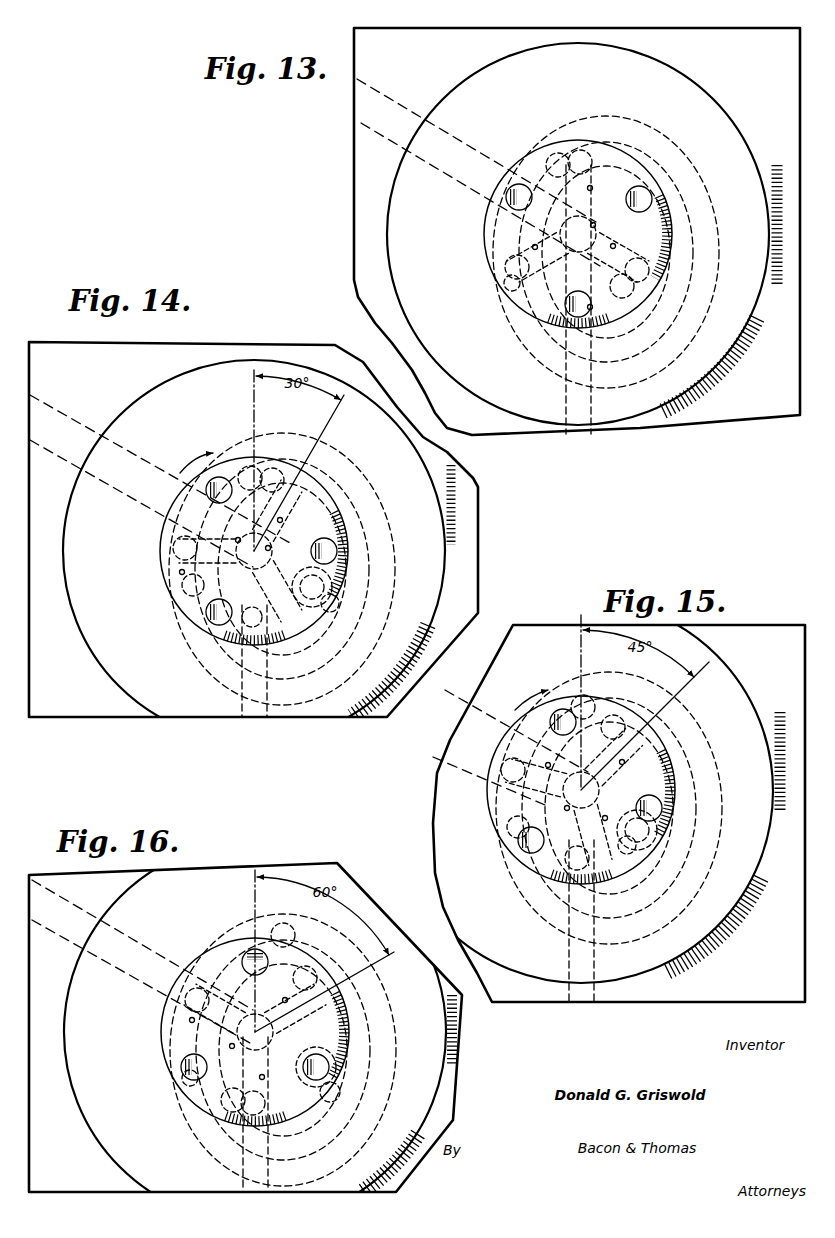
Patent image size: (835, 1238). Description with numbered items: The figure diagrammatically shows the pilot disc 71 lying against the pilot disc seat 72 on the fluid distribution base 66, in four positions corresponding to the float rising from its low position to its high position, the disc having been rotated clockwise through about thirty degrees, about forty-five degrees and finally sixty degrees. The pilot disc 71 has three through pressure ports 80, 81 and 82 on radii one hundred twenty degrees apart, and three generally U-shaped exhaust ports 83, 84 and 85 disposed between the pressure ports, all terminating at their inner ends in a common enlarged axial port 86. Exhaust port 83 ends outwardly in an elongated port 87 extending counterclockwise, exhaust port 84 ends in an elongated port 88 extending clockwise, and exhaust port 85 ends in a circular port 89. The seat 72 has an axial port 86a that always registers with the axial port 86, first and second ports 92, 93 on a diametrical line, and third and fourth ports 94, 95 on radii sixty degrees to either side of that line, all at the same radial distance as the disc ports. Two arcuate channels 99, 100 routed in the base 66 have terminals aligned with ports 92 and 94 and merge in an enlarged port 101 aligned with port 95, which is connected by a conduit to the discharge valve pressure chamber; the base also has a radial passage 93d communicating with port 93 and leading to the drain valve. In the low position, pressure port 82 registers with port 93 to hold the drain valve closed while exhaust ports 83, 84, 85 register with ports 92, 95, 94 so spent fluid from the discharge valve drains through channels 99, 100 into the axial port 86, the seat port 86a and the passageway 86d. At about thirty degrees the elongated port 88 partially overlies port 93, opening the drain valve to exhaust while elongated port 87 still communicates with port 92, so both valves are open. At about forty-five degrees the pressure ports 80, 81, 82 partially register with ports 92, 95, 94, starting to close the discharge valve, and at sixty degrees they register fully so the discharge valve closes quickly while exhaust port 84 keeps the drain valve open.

In FIG. 13, the fluid distribution base 66 is at (352, 161).
In FIG. 14, the fluid distribution base 66 is at (481, 540).
In FIG. 15, the fluid distribution base 66 is at (787, 624).
In FIG. 16, the fluid distribution base 66 is at (465, 1027).
In FIG. 13, the pilot disc 71 is at (545, 143).
In FIG. 14, the pilot disc 71 is at (340, 507).
In FIG. 15, the pilot disc 71 is at (489, 829).
In FIG. 16, the pilot disc 71 is at (160, 1047).
In FIG. 13, the pilot disc seat 72 is at (739, 126).
In FIG. 14, the pilot disc seat 72 is at (99, 669).
In FIG. 15, the pilot disc seat 72 is at (740, 895).
In FIG. 16, the pilot disc seat 72 is at (106, 1154).
In FIG. 13, the pressure port 80 is at (512, 198).
In FIG. 14, the pressure port 80 is at (206, 490).
In FIG. 15, the pressure port 80 is at (563, 709).
In FIG. 16, the pressure port 80 is at (247, 955).
In FIG. 13, the pressure port 81 is at (643, 198).
In FIG. 14, the pressure port 81 is at (335, 554).
In FIG. 15, the pressure port 81 is at (663, 808).
In FIG. 16, the pressure port 81 is at (330, 1068).
In FIG. 13, the pressure port 82 is at (565, 304).
In FIG. 14, the pressure port 82 is at (206, 616).
In FIG. 15, the pressure port 82 is at (520, 846).
In FIG. 16, the pressure port 82 is at (185, 1075).
In FIG. 13, the exhaust port 83 is at (593, 188).
In FIG. 14, the exhaust port 83 is at (283, 521).
In FIG. 15, the exhaust port 83 is at (624, 764).
In FIG. 16, the exhaust port 83 is at (285, 997).
In FIG. 13, the exhaust port 84 is at (616, 246).
In FIG. 14, the exhaust port 84 is at (271, 549).
In FIG. 15, the exhaust port 84 is at (607, 816).
In FIG. 16, the exhaust port 84 is at (265, 1077).
In FIG. 13, the exhaust port 85 is at (532, 247).
In FIG. 14, the exhaust port 85 is at (179, 572).
In FIG. 15, the exhaust port 85 is at (545, 764).
In FIG. 16, the exhaust port 85 is at (189, 1020).
In FIG. 13, the axial port 86 is at (578, 256).
In FIG. 14, the axial port 86 is at (252, 530).
In FIG. 15, the axial port 86 is at (588, 770).
In FIG. 16, the axial port 86 is at (292, 1040).
In FIG. 13, the axial port of seat 86a is at (595, 223).
In FIG. 14, the axial port of seat 86a is at (235, 539).
In FIG. 15, the axial port of seat 86a is at (564, 809).
In FIG. 16, the axial port of seat 86a is at (229, 1046).
In FIG. 13, the passageway 86d is at (405, 108).
In FIG. 14, the passageway 86d is at (70, 420).
In FIG. 15, the passageway 86d is at (500, 747).
In FIG. 16, the passageway 86d is at (56, 935).
In FIG. 13, the elongated port 87 is at (560, 153).
In FIG. 14, the elongated port 87 is at (283, 468).
In FIG. 15, the elongated port 87 is at (626, 727).
In FIG. 16, the elongated port 87 is at (318, 977).
In FIG. 13, the elongated port 88 is at (652, 312).
In FIG. 14, the elongated port 88 is at (316, 661).
In FIG. 15, the elongated port 88 is at (520, 885).
In FIG. 16, the elongated port 88 is at (230, 1089).
In FIG. 13, the circular port 89 is at (505, 266).
In FIG. 14, the circular port 89 is at (173, 545).
In FIG. 15, the circular port 89 is at (505, 759).
In FIG. 16, the circular port 89 is at (185, 995).
In FIG. 13, the first port 92 is at (590, 150).
In FIG. 14, the first port 92 is at (246, 465).
In FIG. 15, the first port 92 is at (588, 696).
In FIG. 16, the first port 92 is at (278, 924).
In FIG. 13, the second port 93 is at (593, 307).
In FIG. 14, the second port 93 is at (250, 606).
In FIG. 15, the second port 93 is at (573, 848).
In FIG. 16, the second port 93 is at (266, 1104).
In FIG. 13, the radial passage 93d is at (586, 436).
In FIG. 14, the radial passage 93d is at (247, 718).
In FIG. 15, the radial passage 93d is at (600, 988).
In FIG. 16, the radial passage 93d is at (275, 1173).
In FIG. 13, the third port 94 is at (505, 288).
In FIG. 14, the third port 94 is at (182, 591).
In FIG. 15, the third port 94 is at (508, 822).
In FIG. 16, the third port 94 is at (181, 1070).
In FIG. 13, the fourth port 95 is at (650, 283).
In FIG. 14, the fourth port 95 is at (333, 614).
In FIG. 15, the fourth port 95 is at (655, 849).
In FIG. 16, the fourth port 95 is at (340, 1120).
In FIG. 13, the arcuate channel 99 is at (720, 222).
In FIG. 14, the arcuate channel 99 is at (394, 522).
In FIG. 15, the arcuate channel 99 is at (717, 760).
In FIG. 16, the arcuate channel 99 is at (394, 1007).
In FIG. 13, the arcuate channel 100 is at (641, 355).
In FIG. 14, the arcuate channel 100 is at (205, 683).
In FIG. 15, the arcuate channel 100 is at (650, 891).
In FIG. 16, the arcuate channel 100 is at (195, 1163).
In FIG. 13, the enlarged port 101 is at (660, 268).
In FIG. 14, the enlarged port 101 is at (345, 598).
In FIG. 15, the enlarged port 101 is at (660, 836).
In FIG. 16, the enlarged port 101 is at (340, 1090).